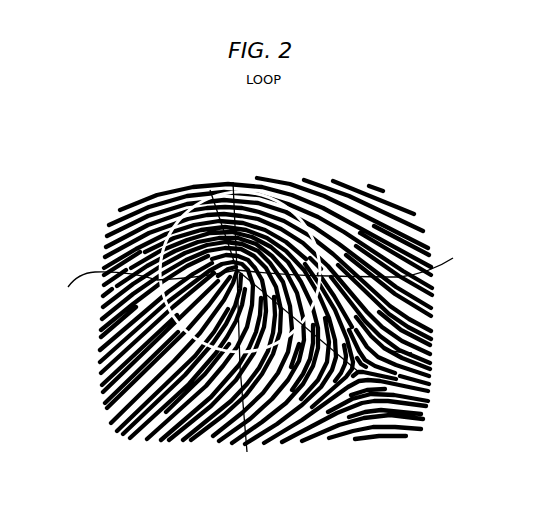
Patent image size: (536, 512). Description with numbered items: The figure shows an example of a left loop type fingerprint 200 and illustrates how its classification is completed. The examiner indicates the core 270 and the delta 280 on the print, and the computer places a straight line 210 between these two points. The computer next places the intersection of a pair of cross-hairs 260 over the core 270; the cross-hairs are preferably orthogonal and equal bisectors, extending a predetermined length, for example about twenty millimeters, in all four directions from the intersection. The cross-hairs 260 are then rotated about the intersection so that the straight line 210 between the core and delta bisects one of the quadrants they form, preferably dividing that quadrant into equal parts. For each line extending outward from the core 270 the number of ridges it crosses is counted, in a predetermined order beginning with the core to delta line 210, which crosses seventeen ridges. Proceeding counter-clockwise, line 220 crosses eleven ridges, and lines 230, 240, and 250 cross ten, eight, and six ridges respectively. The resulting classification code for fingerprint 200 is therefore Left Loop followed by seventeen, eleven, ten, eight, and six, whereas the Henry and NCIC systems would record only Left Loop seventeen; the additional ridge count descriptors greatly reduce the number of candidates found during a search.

The left loop type fingerprint 200 is at (386, 139).
The straight line 210 is at (412, 353).
The line 220 is at (360, 266).
The line 230 is at (233, 182).
The line 240 is at (134, 282).
The line 250 is at (243, 371).
The cross-hairs 260 is at (176, 247).
The core 270 is at (210, 190).
The delta 280 is at (348, 378).